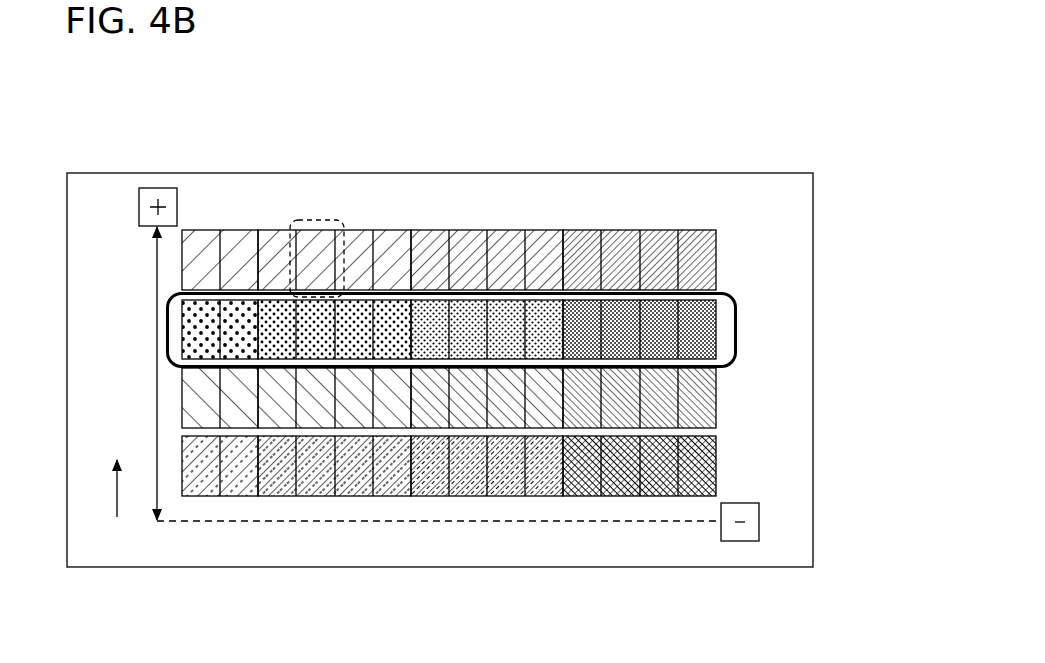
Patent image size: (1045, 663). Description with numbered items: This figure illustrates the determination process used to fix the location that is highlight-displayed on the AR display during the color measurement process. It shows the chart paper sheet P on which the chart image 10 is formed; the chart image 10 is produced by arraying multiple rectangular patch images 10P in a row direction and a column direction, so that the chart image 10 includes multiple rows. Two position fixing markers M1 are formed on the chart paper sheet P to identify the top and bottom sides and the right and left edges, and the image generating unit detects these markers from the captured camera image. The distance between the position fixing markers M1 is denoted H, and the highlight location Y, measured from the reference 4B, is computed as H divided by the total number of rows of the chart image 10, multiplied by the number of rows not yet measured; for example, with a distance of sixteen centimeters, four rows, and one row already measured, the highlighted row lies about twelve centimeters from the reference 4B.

The chart paper sheet P is at (466, 134).
The chart image 10 is at (614, 220).
The patch image 10P is at (318, 220).
The position fixing marker M1 is at (190, 195).
The reference 4B is at (465, 522).
The distance between the position fixing markers H is at (144, 373).
The highlight location Y is at (114, 470).